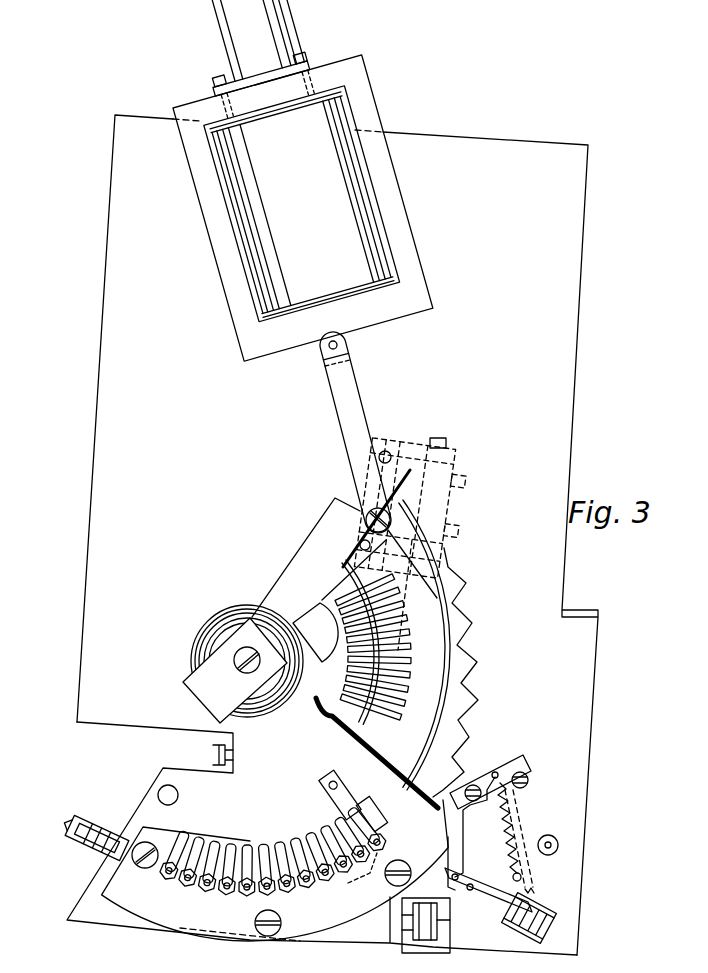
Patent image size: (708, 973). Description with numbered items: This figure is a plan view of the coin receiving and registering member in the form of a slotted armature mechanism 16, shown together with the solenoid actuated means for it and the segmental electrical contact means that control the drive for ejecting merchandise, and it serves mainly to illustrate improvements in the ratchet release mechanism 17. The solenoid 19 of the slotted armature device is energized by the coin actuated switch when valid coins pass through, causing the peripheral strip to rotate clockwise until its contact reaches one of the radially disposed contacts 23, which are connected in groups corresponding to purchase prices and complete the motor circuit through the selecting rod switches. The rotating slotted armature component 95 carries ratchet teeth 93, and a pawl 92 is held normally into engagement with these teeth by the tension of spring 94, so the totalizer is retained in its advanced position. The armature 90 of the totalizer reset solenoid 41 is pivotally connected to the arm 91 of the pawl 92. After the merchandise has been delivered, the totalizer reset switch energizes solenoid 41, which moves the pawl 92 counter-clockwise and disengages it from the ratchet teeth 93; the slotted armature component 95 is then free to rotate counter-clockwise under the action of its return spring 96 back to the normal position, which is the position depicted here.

The slotted armature mechanism 16 is at (517, 612).
The ratchet release mechanism 17 is at (537, 758).
The solenoid 19 is at (362, 226).
The radially disposed contacts 23 is at (253, 848).
The totalizer reset solenoid 41 is at (535, 907).
The armature 90 is at (480, 897).
The arm 91 is at (455, 857).
The pawl 92 is at (455, 787).
The ratchet teeth 93 is at (472, 687).
The spring 94 is at (507, 818).
The slotted armature component 95 is at (432, 610).
The return spring 96 is at (203, 622).